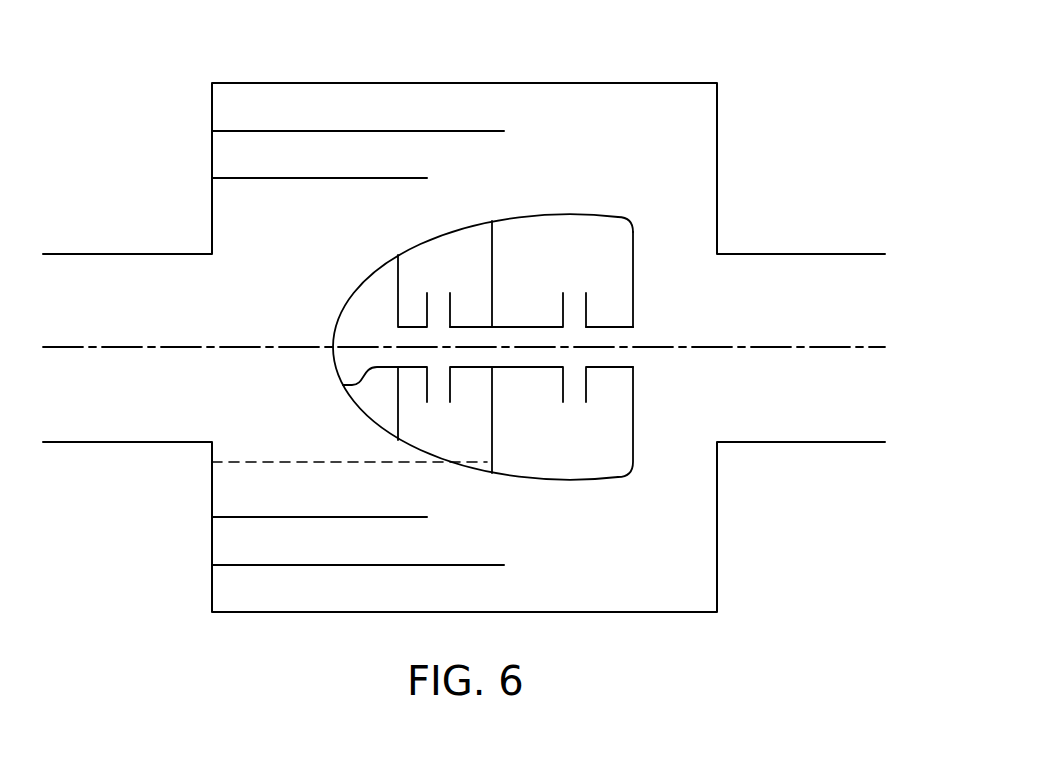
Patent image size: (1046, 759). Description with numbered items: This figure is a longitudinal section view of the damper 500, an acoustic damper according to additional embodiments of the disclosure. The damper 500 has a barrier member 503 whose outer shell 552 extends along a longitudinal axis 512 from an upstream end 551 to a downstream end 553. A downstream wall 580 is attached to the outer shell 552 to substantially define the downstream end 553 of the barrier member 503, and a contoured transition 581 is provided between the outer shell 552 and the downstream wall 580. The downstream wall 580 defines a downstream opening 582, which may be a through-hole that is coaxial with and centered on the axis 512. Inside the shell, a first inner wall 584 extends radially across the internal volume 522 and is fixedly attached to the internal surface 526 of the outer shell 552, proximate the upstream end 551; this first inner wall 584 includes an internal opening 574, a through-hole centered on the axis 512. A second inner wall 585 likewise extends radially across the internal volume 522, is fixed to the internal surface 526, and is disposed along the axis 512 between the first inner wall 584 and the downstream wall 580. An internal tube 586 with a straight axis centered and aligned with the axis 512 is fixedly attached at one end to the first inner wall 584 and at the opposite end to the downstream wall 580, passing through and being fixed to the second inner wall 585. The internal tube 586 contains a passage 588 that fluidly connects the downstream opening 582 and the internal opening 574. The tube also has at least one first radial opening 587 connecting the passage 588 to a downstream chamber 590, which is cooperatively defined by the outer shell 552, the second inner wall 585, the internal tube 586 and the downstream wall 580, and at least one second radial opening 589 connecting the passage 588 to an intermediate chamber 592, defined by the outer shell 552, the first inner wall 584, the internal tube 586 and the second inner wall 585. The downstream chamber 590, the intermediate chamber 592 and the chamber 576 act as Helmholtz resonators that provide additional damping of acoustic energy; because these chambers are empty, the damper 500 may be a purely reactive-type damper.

The damper 500 is at (143, 108).
The barrier member 503 is at (344, 406).
The axis 512 is at (852, 346).
The internal volume 522 is at (590, 280).
The internal surface 526 is at (417, 246).
The upstream end 551 is at (333, 332).
The outer shell 552 is at (403, 251).
The downstream end 553 is at (627, 478).
The internal opening 574 is at (345, 385).
The chamber 576 is at (377, 408).
The downstream wall 580 is at (636, 263).
The contoured transition 581 is at (633, 222).
The downstream opening 582 is at (636, 368).
The first inner wall 584 is at (392, 295).
The second inner wall 585 is at (500, 457).
The internal tube 586 is at (547, 368).
The first radial opening 587 is at (565, 307).
The passage 588 is at (634, 337).
The second radial opening 589 is at (428, 388).
The downstream chamber 590 is at (518, 277).
The intermediate chamber 592 is at (449, 280).